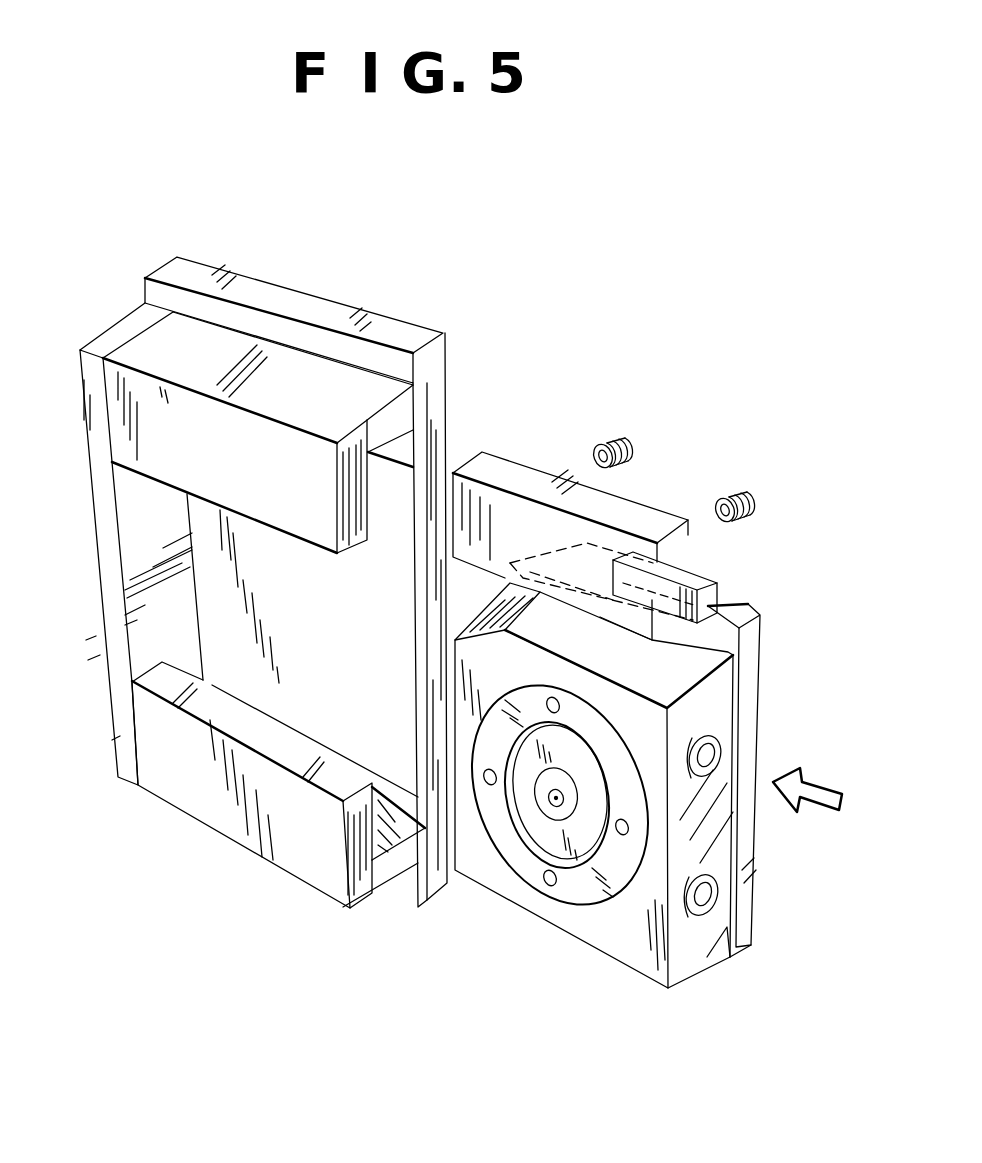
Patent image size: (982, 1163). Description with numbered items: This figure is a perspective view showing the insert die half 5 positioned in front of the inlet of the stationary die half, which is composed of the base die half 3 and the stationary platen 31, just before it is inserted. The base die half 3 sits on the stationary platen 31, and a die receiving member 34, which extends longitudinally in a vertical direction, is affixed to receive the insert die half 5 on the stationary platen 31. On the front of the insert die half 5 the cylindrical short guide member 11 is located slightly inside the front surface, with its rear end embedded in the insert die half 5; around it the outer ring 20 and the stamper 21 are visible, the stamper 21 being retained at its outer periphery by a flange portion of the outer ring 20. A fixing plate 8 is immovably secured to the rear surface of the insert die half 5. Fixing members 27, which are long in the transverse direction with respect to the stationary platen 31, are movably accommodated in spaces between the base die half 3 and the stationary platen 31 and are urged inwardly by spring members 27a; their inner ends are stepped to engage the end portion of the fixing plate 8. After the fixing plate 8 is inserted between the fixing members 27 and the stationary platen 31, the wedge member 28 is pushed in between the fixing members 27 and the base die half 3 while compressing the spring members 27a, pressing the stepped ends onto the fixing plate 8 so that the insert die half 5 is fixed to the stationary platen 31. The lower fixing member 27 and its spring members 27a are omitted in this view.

The base die half 3 is at (243, 483).
The insert die half 5 is at (613, 920).
The fixing plate 8 is at (753, 662).
The guide member 11 is at (550, 814).
The outer ring 20 is at (575, 887).
The stamper 21 is at (560, 848).
The fixing member 27 is at (505, 515).
The spring member 27a is at (613, 437).
The wedge member 28 is at (697, 573).
The stationary platen 31 is at (322, 310).
The die receiving member 34 is at (105, 575).